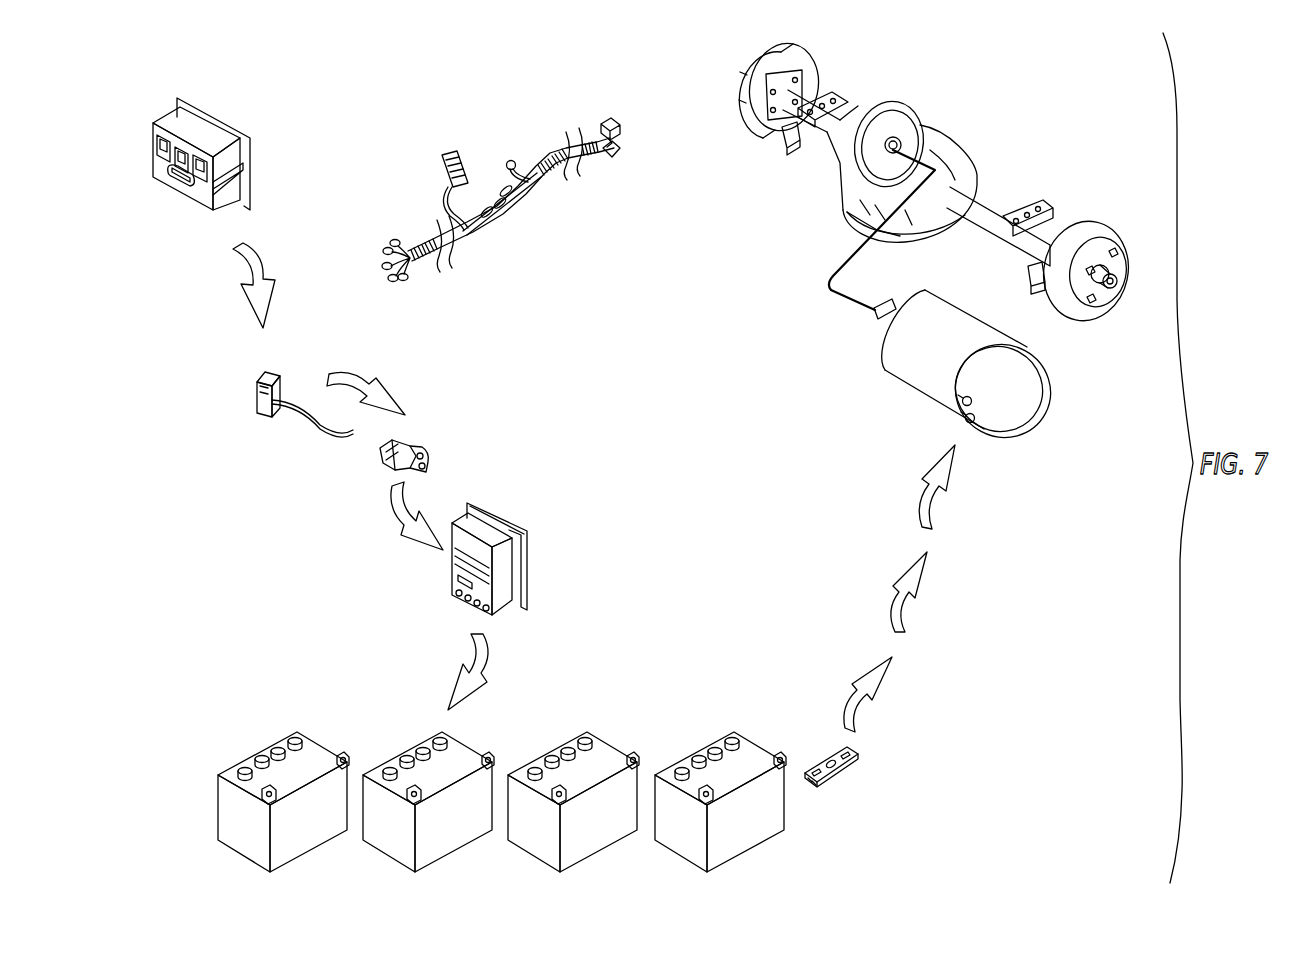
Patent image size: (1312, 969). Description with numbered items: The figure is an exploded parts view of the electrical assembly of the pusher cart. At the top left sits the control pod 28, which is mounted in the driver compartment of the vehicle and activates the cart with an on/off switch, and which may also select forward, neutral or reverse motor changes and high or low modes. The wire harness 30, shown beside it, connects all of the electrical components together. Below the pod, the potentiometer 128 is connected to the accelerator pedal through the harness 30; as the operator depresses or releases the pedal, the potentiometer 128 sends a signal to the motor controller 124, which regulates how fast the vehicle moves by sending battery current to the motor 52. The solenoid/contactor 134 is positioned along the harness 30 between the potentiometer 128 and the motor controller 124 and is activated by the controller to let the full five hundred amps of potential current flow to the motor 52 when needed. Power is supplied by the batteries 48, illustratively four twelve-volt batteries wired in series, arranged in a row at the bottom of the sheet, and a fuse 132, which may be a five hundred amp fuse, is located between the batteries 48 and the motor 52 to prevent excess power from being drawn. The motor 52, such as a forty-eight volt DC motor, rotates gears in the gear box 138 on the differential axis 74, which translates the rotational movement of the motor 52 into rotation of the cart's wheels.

The control pod 28 is at (162, 186).
The harness 30 is at (548, 152).
The differential axis 74 is at (938, 183).
The gear box 138 is at (840, 190).
The motor 52 is at (1045, 405).
The potentiometer 128 is at (265, 417).
The solenoid/contactor 134 is at (420, 450).
The motor controller 124 is at (505, 513).
The batteries 48 is at (308, 856).
The fuse 132 is at (838, 776).